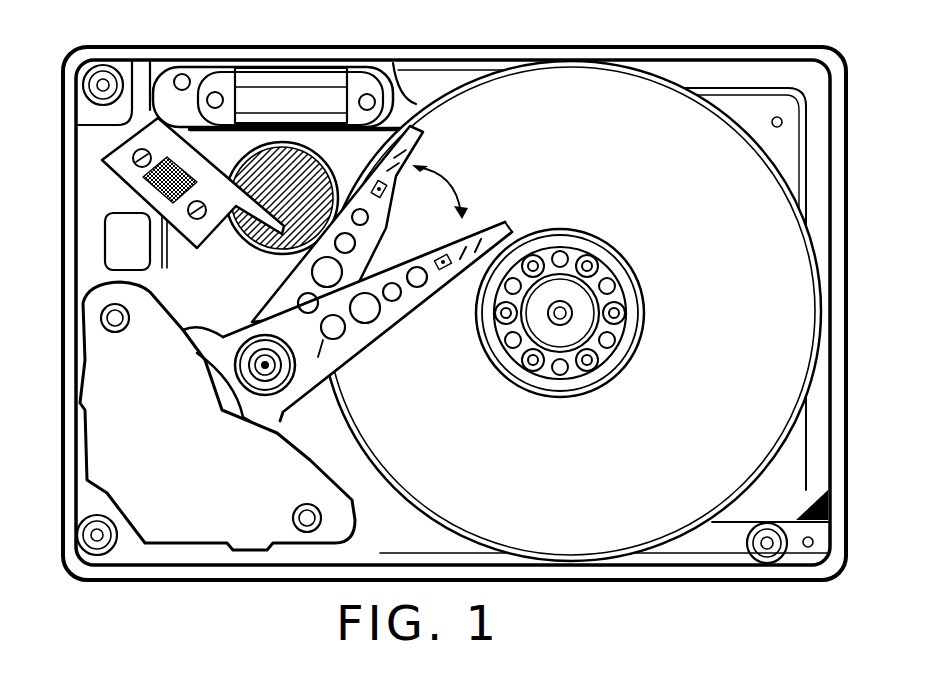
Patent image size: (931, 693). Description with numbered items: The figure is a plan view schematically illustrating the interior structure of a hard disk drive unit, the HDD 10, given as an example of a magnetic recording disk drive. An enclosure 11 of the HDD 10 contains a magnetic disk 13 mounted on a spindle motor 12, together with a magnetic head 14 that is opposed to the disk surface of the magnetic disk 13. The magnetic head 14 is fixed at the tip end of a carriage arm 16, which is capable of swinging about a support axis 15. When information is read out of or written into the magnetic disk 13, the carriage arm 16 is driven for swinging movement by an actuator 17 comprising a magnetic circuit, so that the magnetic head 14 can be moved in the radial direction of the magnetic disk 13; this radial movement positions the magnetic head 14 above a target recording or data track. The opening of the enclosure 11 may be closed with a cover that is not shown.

The hard disk drive 10 is at (432, 38).
The enclosure 11 is at (652, 47).
The spindle motor 12 is at (583, 327).
The magnetic disk 13 is at (712, 225).
The magnetic head 14 is at (483, 222).
The support axis 15 is at (264, 360).
The carriage arm 16 is at (388, 331).
The actuator 17 is at (182, 465).